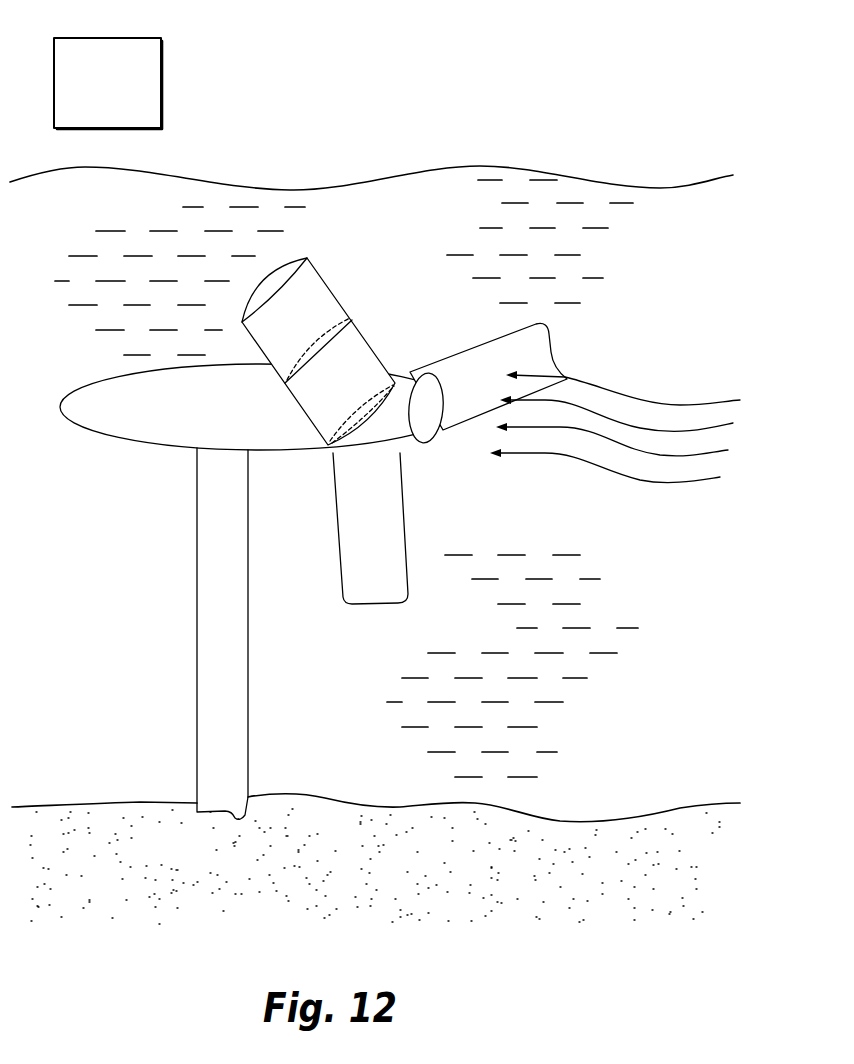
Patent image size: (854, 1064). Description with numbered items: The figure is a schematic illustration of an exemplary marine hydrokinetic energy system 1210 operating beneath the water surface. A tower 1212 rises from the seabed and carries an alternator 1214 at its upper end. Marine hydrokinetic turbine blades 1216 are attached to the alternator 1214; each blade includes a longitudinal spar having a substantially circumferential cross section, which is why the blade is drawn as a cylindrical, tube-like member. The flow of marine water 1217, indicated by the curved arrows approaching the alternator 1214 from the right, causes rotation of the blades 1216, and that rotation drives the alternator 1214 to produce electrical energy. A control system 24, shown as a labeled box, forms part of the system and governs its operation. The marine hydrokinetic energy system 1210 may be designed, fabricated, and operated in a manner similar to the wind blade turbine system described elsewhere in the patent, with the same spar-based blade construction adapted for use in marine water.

The control system 24 is at (119, 117).
The marine hydrokinetic energy system 1210 is at (434, 157).
The tower 1212 is at (196, 640).
The alternator 1214 is at (425, 388).
The marine hydrokinetic turbine blades 1216 is at (338, 291).
The flow of marine water 1217 is at (654, 377).